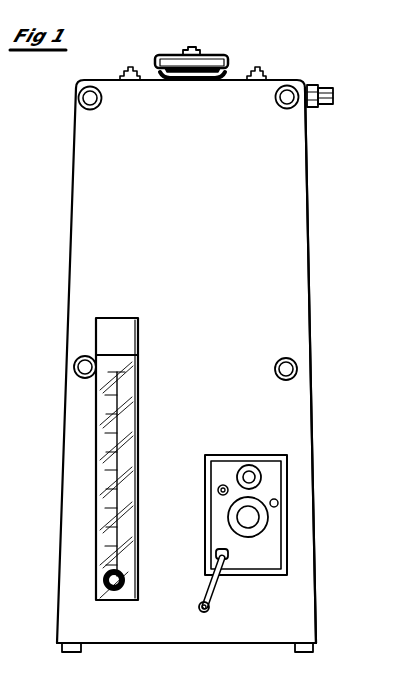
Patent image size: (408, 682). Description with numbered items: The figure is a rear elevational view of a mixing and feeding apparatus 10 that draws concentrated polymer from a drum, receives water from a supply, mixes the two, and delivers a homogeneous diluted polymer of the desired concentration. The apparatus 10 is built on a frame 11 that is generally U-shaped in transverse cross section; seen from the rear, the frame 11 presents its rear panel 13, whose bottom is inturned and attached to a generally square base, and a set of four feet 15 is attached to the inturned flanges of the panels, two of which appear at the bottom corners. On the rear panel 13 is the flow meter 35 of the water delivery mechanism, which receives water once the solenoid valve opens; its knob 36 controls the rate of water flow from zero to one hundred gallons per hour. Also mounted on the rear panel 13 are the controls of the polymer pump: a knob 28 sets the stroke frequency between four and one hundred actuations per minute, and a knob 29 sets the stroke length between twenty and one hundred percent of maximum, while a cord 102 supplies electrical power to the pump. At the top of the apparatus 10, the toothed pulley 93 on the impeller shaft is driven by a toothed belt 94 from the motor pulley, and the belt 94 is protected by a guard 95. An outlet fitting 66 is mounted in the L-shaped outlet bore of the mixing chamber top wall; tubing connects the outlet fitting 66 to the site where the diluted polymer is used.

The mixing and feeding apparatus 10 is at (360, 104).
The frame 11 is at (310, 268).
The rear panel 13 is at (316, 333).
The feet 15 is at (72, 652).
The knob 28 is at (262, 477).
The knob 29 is at (260, 517).
The flow meter 35 is at (96, 527).
The knob 36 is at (106, 585).
The outlet fitting 66 is at (326, 108).
The toothed pulley 93 is at (181, 79).
The toothed belt 94 is at (170, 57).
The guard 95 is at (222, 56).
The cord 102 is at (216, 588).